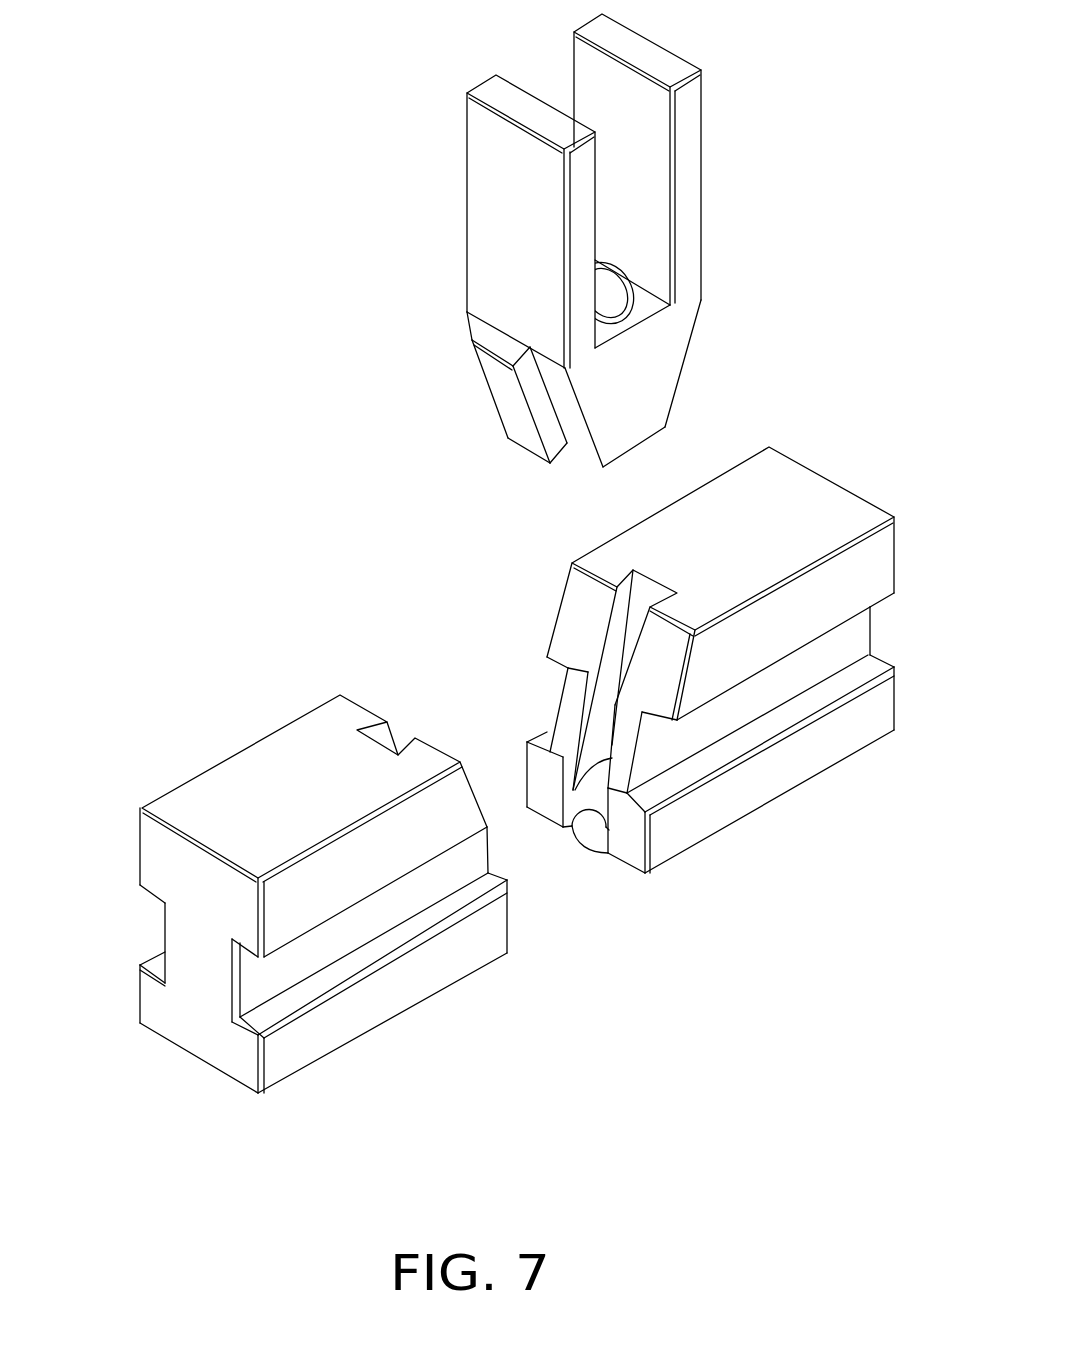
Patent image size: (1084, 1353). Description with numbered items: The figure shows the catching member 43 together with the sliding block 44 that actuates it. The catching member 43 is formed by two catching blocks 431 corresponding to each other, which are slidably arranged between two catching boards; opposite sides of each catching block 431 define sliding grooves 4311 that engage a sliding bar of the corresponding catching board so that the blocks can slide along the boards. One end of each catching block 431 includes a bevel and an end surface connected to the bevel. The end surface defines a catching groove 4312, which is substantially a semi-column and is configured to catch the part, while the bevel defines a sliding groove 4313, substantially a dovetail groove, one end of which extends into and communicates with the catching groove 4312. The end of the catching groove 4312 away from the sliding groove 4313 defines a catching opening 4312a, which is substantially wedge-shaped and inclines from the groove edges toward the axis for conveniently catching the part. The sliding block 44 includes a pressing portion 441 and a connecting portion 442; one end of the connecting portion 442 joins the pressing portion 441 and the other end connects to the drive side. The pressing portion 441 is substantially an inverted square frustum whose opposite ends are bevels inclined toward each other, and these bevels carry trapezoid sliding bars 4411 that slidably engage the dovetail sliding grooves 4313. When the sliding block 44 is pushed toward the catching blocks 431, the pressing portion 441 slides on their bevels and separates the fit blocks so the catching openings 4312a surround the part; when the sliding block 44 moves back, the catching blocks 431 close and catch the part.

The catching member 43 is at (504, 762).
The catching block 431 is at (800, 488).
The sliding groove 4311 is at (148, 917).
The catching groove 4312 is at (596, 795).
The catching opening 4312a is at (592, 834).
The sliding groove 4313 is at (630, 603).
The sliding block 44 is at (552, 240).
The pressing portion 441 is at (673, 342).
The connecting portion 442 is at (693, 167).
The sliding bar 4411 is at (500, 386).